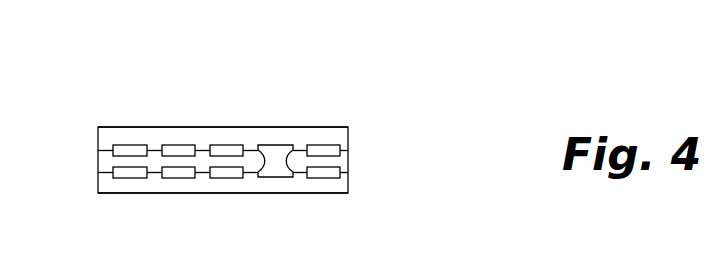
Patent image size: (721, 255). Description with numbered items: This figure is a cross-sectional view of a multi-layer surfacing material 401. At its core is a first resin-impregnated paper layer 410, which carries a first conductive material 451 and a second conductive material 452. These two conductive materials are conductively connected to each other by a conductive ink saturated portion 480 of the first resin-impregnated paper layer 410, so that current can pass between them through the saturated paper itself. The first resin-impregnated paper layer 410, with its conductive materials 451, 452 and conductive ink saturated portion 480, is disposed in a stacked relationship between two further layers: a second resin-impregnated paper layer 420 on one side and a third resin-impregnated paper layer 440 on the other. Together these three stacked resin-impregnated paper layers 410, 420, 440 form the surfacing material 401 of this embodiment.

The surfacing material 401 is at (106, 104).
The third resin-impregnated paper layer 440 is at (338, 134).
The first resin-impregnated paper layer 410 is at (343, 160).
The second resin-impregnated paper layer 420 is at (343, 185).
The second conductive material 452 is at (180, 145).
The first conductive material 451 is at (227, 178).
The conductive ink saturated portion 480 is at (275, 158).